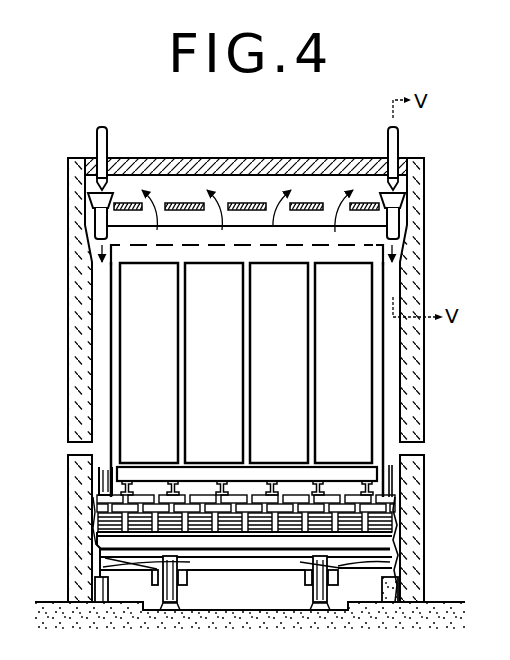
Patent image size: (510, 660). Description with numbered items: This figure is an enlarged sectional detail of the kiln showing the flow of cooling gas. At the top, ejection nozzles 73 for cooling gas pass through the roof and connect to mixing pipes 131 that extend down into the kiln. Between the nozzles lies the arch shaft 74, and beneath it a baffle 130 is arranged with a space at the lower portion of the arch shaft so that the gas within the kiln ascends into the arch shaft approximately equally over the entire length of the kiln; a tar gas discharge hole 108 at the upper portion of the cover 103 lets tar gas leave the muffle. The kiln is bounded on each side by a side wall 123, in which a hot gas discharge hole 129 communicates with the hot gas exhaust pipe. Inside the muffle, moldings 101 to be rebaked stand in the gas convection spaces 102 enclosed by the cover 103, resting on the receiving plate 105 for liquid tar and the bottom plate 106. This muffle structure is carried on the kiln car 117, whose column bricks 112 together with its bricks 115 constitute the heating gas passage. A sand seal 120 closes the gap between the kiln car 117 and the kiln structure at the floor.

The ejection nozzles 73 is at (107, 132).
The arch shaft 74 is at (241, 177).
The moldings 101 is at (200, 338).
The gas convection spaces 102 is at (378, 283).
The cover 103 is at (385, 389).
The receiving plate 105 is at (110, 464).
The bottom plate 106 is at (392, 483).
The tar gas discharge hole 108 is at (325, 244).
The column bricks 112 is at (393, 522).
The bricks 115 is at (128, 538).
The kiln car 117 is at (117, 563).
The sand seal 120 is at (395, 592).
The side wall 123 is at (78, 268).
The hot gas discharge hole 129 is at (421, 442).
The baffle 130 is at (183, 206).
The mixing pipes 131 is at (98, 222).